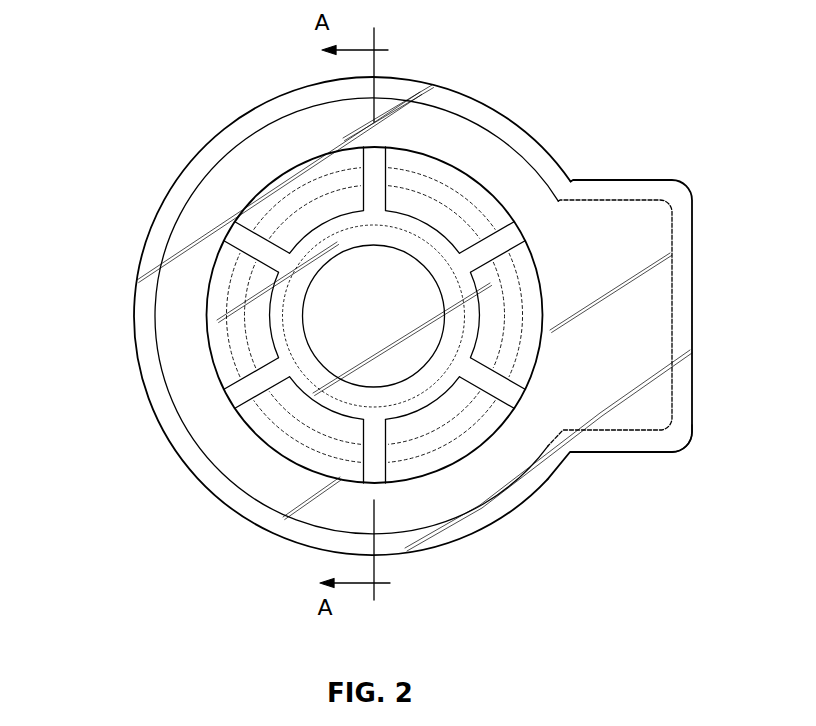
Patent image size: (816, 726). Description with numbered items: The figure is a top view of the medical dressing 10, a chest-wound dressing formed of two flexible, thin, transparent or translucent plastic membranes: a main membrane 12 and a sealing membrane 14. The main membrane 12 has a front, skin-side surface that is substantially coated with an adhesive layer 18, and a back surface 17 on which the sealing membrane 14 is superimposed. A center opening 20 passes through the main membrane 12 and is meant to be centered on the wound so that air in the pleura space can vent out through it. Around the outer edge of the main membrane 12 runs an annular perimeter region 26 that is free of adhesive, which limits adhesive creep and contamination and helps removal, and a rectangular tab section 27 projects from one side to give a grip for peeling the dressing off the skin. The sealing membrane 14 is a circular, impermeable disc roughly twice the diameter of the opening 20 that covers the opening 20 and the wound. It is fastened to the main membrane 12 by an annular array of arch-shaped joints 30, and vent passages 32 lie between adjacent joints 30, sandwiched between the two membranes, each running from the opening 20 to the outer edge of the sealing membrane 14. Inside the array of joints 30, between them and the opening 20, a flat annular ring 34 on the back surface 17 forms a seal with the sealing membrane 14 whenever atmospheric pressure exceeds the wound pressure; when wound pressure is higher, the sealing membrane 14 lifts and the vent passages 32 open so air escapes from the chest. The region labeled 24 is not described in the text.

The medical dressing 10 is at (176, 510).
The main membrane 12 is at (224, 195).
The sealing membrane 14 is at (310, 446).
The back surface 17 is at (590, 249).
The adhesive layer 18 is at (448, 108).
The center opening 20 is at (361, 324).
The flat surface of tab 24 is at (586, 375).
The annular perimeter region 26 is at (513, 135).
The rectangular tab section 27 is at (654, 413).
The joints 30 is at (293, 218).
The vent passages 32 is at (378, 462).
The annular ring 34 is at (427, 256).